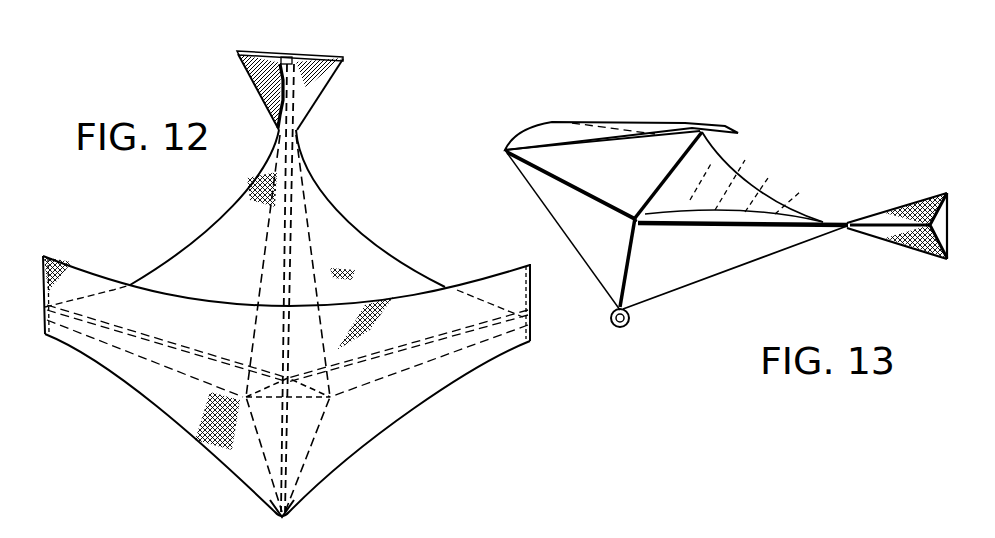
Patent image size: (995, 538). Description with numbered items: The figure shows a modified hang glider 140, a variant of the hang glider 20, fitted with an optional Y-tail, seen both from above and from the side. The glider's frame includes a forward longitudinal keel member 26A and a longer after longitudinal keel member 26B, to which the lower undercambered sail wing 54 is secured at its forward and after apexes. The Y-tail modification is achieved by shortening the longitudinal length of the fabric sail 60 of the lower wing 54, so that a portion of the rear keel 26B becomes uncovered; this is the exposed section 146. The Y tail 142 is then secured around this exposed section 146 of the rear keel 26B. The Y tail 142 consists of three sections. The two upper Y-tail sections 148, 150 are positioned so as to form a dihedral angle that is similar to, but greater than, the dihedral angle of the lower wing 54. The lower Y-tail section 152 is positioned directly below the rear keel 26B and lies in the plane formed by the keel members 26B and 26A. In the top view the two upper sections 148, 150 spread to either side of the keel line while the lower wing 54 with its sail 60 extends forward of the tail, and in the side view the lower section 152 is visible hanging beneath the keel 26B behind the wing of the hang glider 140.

In FIG. 12, the hang glider 20 is at (383, 278).
In FIG. 13, the hang glider 20 is at (713, 176).
In FIG. 12, the forward longitudinal keel member 26A is at (309, 519).
In FIG. 12, the after longitudinal keel member 26B is at (283, 275).
In FIG. 13, the after longitudinal keel member 26B is at (781, 229).
In FIG. 12, the lower undercambered sail wing 54 is at (300, 166).
In FIG. 12, the sail 60 is at (347, 248).
In FIG. 12, the modified hang glider 140 is at (338, 205).
In FIG. 13, the modified hang glider 140 is at (789, 204).
In FIG. 12, the Y tail 142 is at (314, 93).
In FIG. 12, the exposed section of rear keel 146 is at (270, 97).
In FIG. 12, the upper Y-tail section 148 is at (315, 56).
In FIG. 13, the upper Y-tail section 148 is at (928, 243).
In FIG. 12, the upper Y-tail section 150 is at (280, 56).
In FIG. 13, the upper Y-tail section 150 is at (913, 207).
In FIG. 13, the lower Y-tail section 152 is at (903, 233).